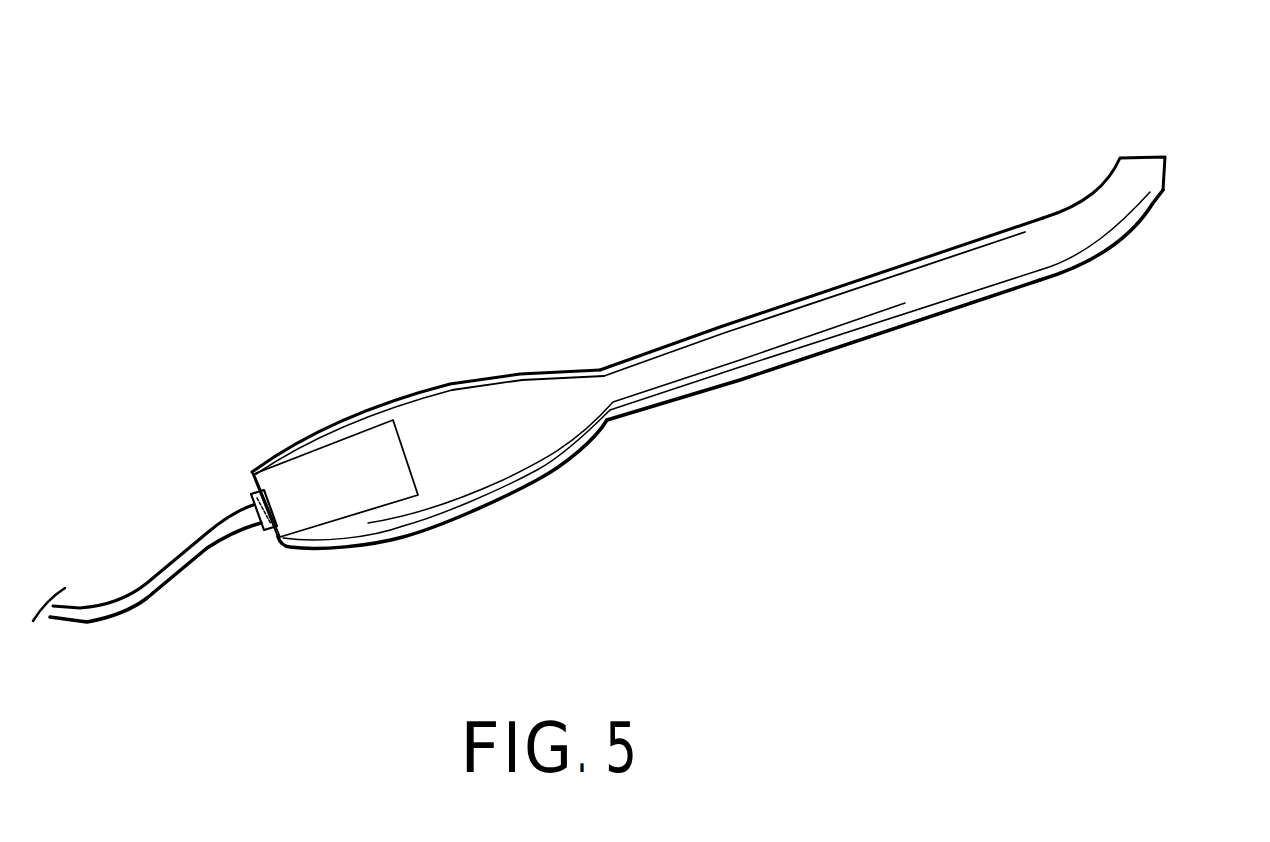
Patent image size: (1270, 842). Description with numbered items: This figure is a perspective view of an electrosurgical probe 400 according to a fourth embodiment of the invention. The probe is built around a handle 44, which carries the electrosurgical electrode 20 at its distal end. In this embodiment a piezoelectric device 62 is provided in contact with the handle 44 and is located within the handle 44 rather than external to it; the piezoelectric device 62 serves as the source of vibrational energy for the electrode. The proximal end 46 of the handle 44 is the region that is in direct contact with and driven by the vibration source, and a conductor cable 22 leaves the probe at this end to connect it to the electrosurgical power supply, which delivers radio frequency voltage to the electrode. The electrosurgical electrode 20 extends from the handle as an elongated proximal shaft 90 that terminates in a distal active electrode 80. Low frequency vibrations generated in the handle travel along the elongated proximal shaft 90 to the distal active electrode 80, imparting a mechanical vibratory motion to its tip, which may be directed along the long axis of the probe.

The electrosurgical probe 400 is at (505, 238).
The electrosurgical electrode 20 is at (704, 306).
The handle 44 is at (470, 398).
The piezoelectric device 62 is at (372, 437).
The proximal end of handle 46 is at (251, 472).
The conductor cable 22 is at (125, 585).
The elongated proximal shaft 90 is at (660, 377).
The distal active electrode 80 is at (1133, 194).